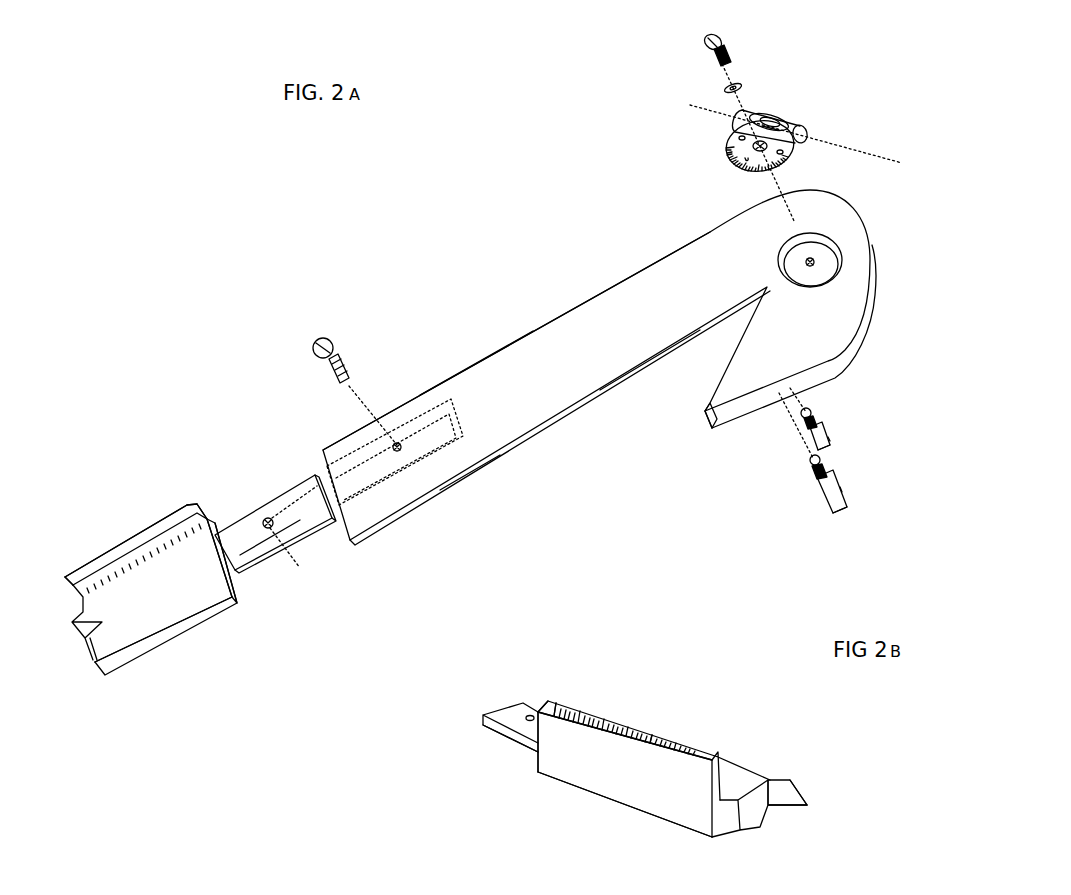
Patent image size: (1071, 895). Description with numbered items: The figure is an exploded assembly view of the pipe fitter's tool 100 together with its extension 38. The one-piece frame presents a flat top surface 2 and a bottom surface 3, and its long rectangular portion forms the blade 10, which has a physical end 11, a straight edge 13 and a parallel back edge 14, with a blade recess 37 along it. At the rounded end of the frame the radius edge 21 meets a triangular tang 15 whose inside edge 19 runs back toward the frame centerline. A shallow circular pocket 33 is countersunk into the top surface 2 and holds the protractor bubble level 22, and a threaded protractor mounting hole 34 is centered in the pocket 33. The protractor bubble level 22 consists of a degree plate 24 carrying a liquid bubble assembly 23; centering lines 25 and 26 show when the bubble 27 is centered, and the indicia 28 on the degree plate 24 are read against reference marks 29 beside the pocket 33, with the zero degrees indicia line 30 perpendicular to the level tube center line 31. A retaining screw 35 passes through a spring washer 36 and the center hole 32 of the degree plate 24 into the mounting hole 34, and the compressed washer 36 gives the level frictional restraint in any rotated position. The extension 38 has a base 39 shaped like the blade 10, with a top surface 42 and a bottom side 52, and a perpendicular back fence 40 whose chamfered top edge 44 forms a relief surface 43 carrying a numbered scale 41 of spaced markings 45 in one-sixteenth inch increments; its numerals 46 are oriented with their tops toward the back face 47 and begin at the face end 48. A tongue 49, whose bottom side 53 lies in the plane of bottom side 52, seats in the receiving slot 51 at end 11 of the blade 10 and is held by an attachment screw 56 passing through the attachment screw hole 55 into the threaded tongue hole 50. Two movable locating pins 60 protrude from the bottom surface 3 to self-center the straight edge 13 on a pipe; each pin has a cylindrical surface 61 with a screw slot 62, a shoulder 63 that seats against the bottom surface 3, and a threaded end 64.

In FIG. 2A, the tool 100 is at (504, 381).
In FIG. 2A, the top surface 2 is at (630, 362).
In FIG. 2A, the blade 10 is at (447, 363).
In FIG. 2A, the back edge 14 is at (533, 330).
In FIG. 2A, the straight edge 13 is at (542, 435).
In FIG. 2A, the bottom surface 3 is at (470, 473).
In FIG. 2A, the blade recess 37 is at (647, 360).
In FIG. 2B, the blade recess 37 is at (803, 780).
In FIG. 2A, the radius edge 21 is at (792, 293).
In FIG. 2A, the reference marks 29 is at (778, 269).
In FIG. 2A, the pocket 33 is at (818, 243).
In FIG. 2A, the protractor mounting hole 34 is at (809, 258).
In FIG. 2A, the inside edge 19 is at (717, 397).
In FIG. 2A, the tang 15 is at (728, 392).
In FIG. 2A, the protractor bubble level 22 is at (774, 115).
In FIG. 2A, the liquid bubble assembly 23 is at (747, 110).
In FIG. 2A, the degree plate 24 is at (728, 155).
In FIG. 2A, the centering line 25 is at (773, 120).
In FIG. 2A, the centering line 26 is at (787, 127).
In FIG. 2A, the bubble 27 is at (780, 123).
In FIG. 2A, the indicia 28 is at (727, 160).
In FIG. 2A, the zero degrees indicia line 30 is at (750, 172).
In FIG. 2A, the level tube center line 31 is at (857, 150).
In FIG. 2A, the center hole 32 is at (754, 145).
In FIG. 2A, the retaining screw 35 is at (703, 40).
In FIG. 2A, the spring washer 36 is at (737, 80).
In FIG. 2A, the attachment screw 56 is at (321, 337).
In FIG. 2A, the receiving slot 51 is at (422, 412).
In FIG. 2A, the extension attachment screw hole 55 is at (397, 452).
In FIG. 2A, the end 11 is at (265, 521).
In FIG. 2A, the threaded tongue hole 50 is at (268, 518).
In FIG. 2A, the tongue bottom side 53 is at (300, 568).
In FIG. 2B, the tongue bottom side 53 is at (485, 730).
In FIG. 2A, the tongue 49 is at (288, 523).
In FIG. 2B, the tongue 49 is at (513, 710).
In FIG. 2A, the extension 38 is at (180, 559).
In FIG. 2B, the extension 38 is at (656, 710).
In FIG. 2A, the base 39 is at (85, 639).
In FIG. 2B, the base 39 is at (767, 807).
In FIG. 2A, the back fence 40 is at (70, 575).
In FIG. 2B, the back fence 40 is at (717, 790).
In FIG. 2A, the numbered scale 41 is at (144, 558).
In FIG. 2B, the numbered scale 41 is at (630, 733).
In FIG. 2A, the top surface 42 is at (160, 593).
In FIG. 2B, the top surface 42 is at (669, 757).
In FIG. 2A, the relief surface 43 is at (193, 503).
In FIG. 2B, the relief surface 43 is at (652, 760).
In FIG. 2A, the top edge 44 is at (120, 543).
In FIG. 2B, the top edge 44 is at (693, 743).
In FIG. 2B, the spaced markings 45 is at (593, 733).
In FIG. 2B, the numerals 46 is at (546, 705).
In FIG. 2A, the back face 47 is at (217, 522).
In FIG. 2B, the back face 47 is at (618, 777).
In FIG. 2A, the face end 48 is at (235, 608).
In FIG. 2B, the face end 48 is at (537, 752).
In FIG. 2A, the bottom side 52 is at (229, 593).
In FIG. 2B, the bottom side 52 is at (567, 783).
In FIG. 2A, the movable locating pins 60 is at (820, 468).
In FIG. 2A, the surface 61 is at (818, 423).
In FIG. 2A, the screw slot 62 is at (830, 440).
In FIG. 2A, the shoulder 63 is at (813, 405).
In FIG. 2A, the threaded end 64 is at (810, 387).